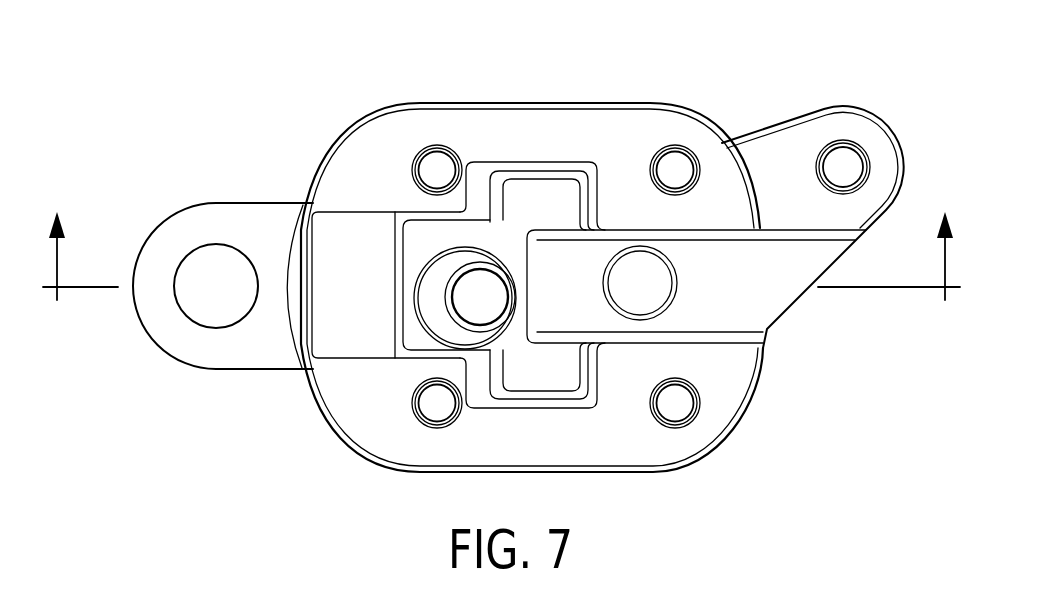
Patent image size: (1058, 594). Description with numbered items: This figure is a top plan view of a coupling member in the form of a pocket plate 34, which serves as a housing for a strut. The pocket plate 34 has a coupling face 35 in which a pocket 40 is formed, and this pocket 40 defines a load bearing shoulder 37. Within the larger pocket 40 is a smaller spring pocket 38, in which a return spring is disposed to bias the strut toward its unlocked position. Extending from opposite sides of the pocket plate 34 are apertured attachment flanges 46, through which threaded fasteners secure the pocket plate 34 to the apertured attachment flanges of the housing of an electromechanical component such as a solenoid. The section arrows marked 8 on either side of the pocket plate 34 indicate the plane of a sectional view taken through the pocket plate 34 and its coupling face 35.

The pocket plate 34 is at (330, 117).
The coupling face 35 is at (459, 130).
The load bearing shoulder 37 is at (332, 323).
The spring pocket 38 is at (478, 297).
The pocket 40 is at (693, 235).
The apertured attachment flanges 46 is at (188, 205).
The section line 8- 8 is at (501, 276).